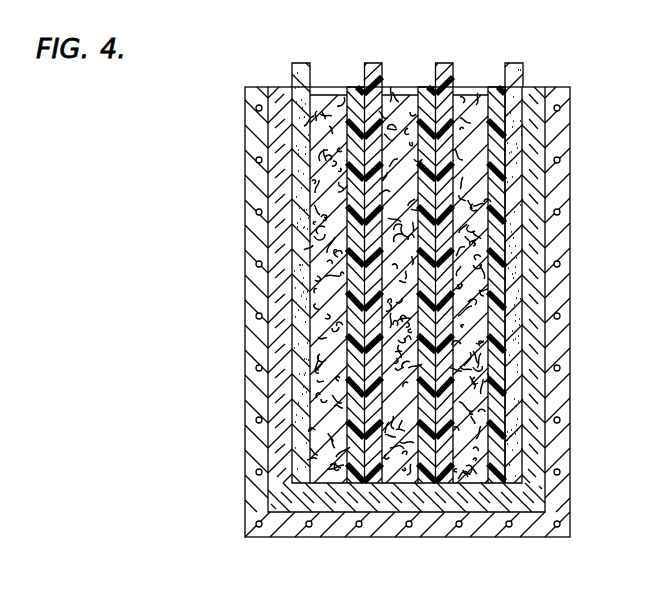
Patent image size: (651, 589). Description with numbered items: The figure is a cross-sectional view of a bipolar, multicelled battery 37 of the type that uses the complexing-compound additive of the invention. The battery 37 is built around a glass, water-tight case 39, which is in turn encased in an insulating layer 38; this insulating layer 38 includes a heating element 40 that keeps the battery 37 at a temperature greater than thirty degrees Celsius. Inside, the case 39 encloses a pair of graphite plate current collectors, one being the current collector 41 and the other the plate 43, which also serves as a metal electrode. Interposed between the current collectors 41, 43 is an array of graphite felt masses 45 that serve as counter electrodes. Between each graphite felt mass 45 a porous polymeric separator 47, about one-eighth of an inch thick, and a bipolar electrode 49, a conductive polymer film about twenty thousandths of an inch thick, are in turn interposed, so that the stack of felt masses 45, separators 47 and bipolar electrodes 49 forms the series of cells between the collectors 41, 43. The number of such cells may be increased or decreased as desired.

The bipolar, multicelled battery 37 is at (579, 267).
The insulating layer 38 is at (569, 327).
The glass, water-tight case 39 is at (537, 432).
The heating element 40 is at (560, 521).
The current collector 41 is at (299, 63).
The plate current collector 43 is at (519, 63).
The graphite felt masses 45 is at (401, 473).
The porous polymeric separator 47 is at (352, 87).
The bipolar electrode 49 is at (443, 63).